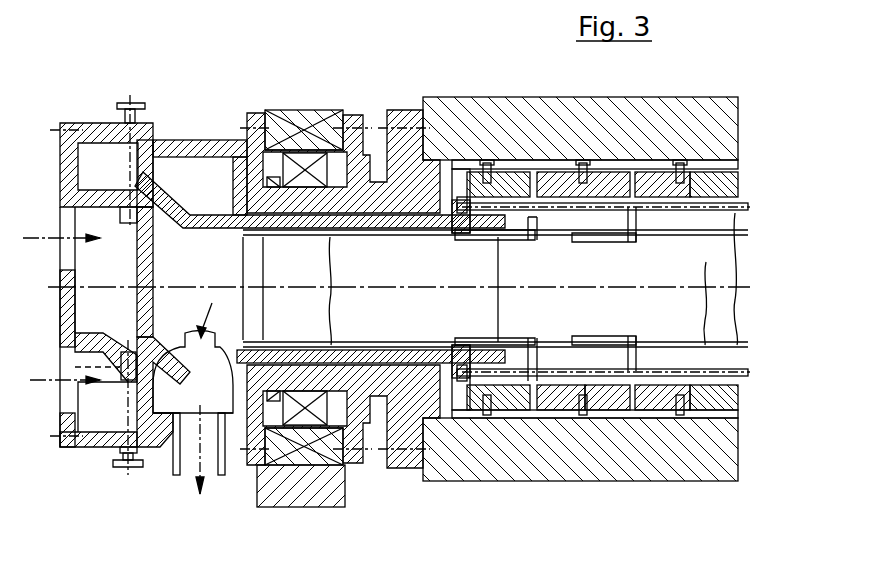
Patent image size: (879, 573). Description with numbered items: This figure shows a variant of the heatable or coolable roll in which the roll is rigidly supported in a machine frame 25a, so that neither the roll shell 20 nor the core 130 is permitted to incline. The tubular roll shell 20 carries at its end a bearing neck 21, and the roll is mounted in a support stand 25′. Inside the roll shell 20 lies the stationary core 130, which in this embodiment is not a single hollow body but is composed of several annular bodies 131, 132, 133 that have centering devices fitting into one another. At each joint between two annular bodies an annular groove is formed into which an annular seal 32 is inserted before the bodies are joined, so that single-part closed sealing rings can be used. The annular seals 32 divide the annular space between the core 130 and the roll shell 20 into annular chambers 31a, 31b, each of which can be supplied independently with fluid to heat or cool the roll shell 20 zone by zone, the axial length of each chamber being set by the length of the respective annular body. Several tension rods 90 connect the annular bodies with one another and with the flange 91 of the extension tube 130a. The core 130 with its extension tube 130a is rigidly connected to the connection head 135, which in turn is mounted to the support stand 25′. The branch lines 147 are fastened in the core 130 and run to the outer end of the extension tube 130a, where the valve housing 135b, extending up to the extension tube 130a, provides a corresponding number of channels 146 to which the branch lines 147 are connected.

The roll shell 20 is at (458, 110).
The bearing neck 21 is at (400, 110).
The support stand 25' is at (304, 106).
The machine frame 25a is at (345, 497).
The annular seals 32 is at (488, 165).
The tension rods 90 is at (710, 215).
The flange 91 is at (470, 403).
The core 130 is at (738, 165).
The extension tube 130a is at (348, 222).
The annular body 131 is at (553, 413).
The annular body 132 is at (608, 417).
The annular body 133 is at (713, 420).
The annular chamber 31a is at (508, 413).
The annular chamber 31b is at (643, 413).
The connection head 135 is at (188, 128).
The valve housing 135b is at (70, 123).
The channels 146 is at (158, 332).
The branch lines 147 is at (336, 343).